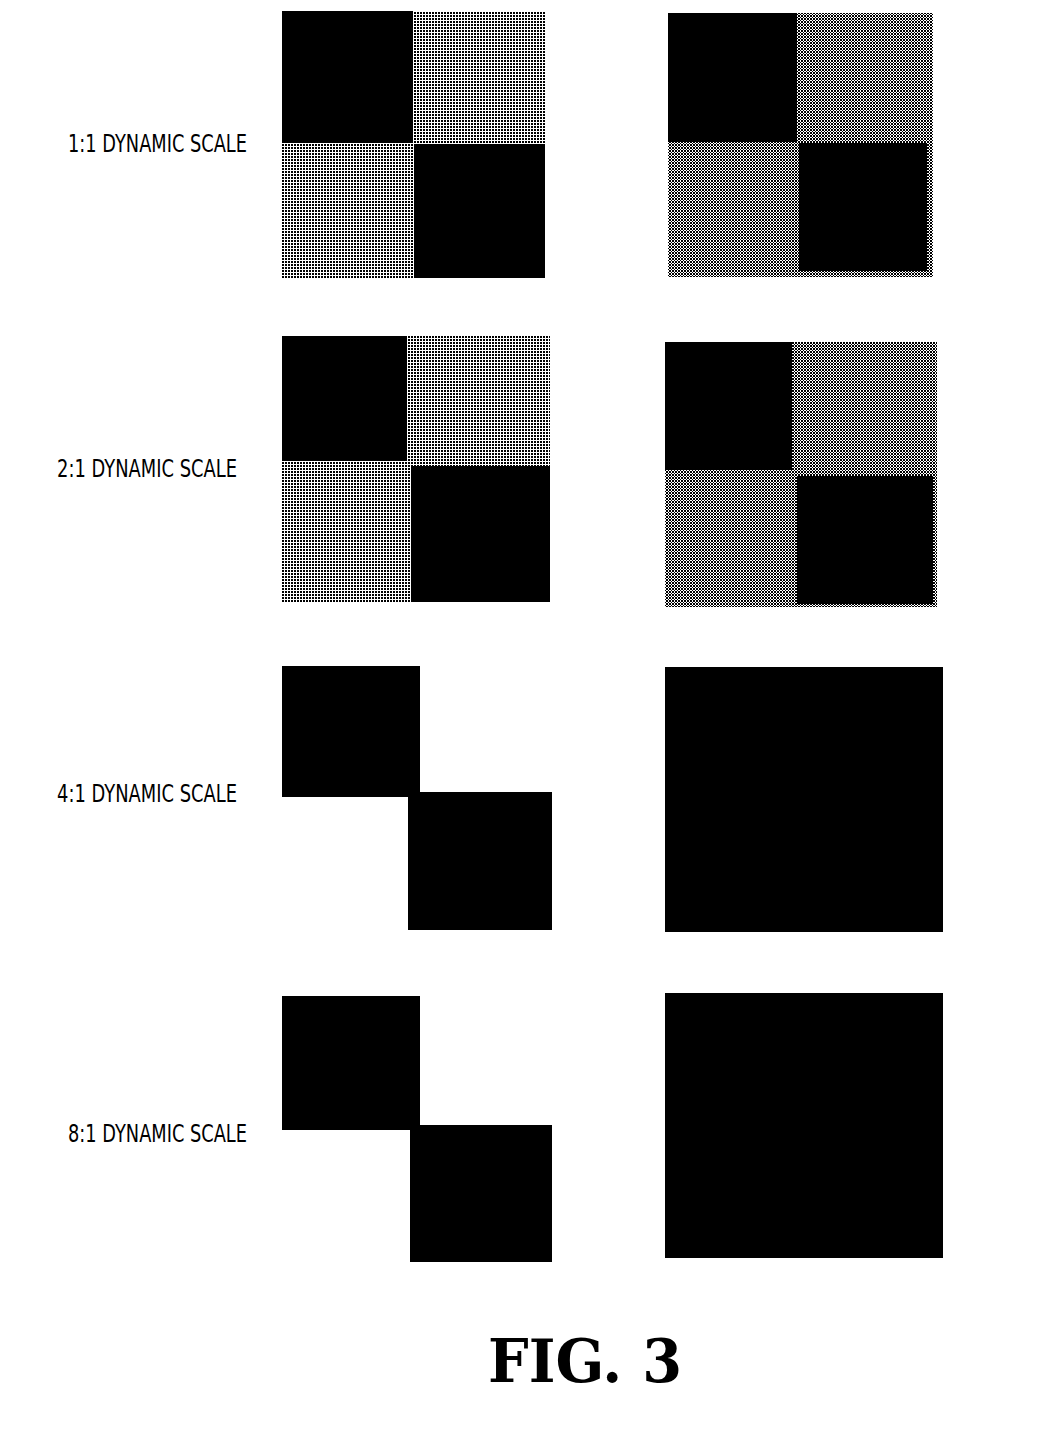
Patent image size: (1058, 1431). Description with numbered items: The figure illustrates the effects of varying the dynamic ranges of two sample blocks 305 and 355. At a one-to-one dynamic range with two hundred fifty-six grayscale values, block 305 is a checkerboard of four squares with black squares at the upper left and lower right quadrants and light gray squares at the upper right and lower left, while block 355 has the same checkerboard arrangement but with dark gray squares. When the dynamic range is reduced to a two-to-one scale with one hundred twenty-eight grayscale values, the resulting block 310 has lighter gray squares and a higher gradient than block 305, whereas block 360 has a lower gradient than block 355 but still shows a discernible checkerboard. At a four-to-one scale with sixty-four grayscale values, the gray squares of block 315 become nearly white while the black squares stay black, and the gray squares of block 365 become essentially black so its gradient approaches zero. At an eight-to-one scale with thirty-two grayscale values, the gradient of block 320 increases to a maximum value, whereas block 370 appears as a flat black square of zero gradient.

The sample block 305 is at (377, 278).
The block 310 is at (377, 603).
The block 315 is at (387, 933).
The block 320 is at (393, 1263).
The sample block 355 is at (763, 277).
The block 360 is at (763, 602).
The block 365 is at (758, 932).
The block 370 is at (757, 1258).